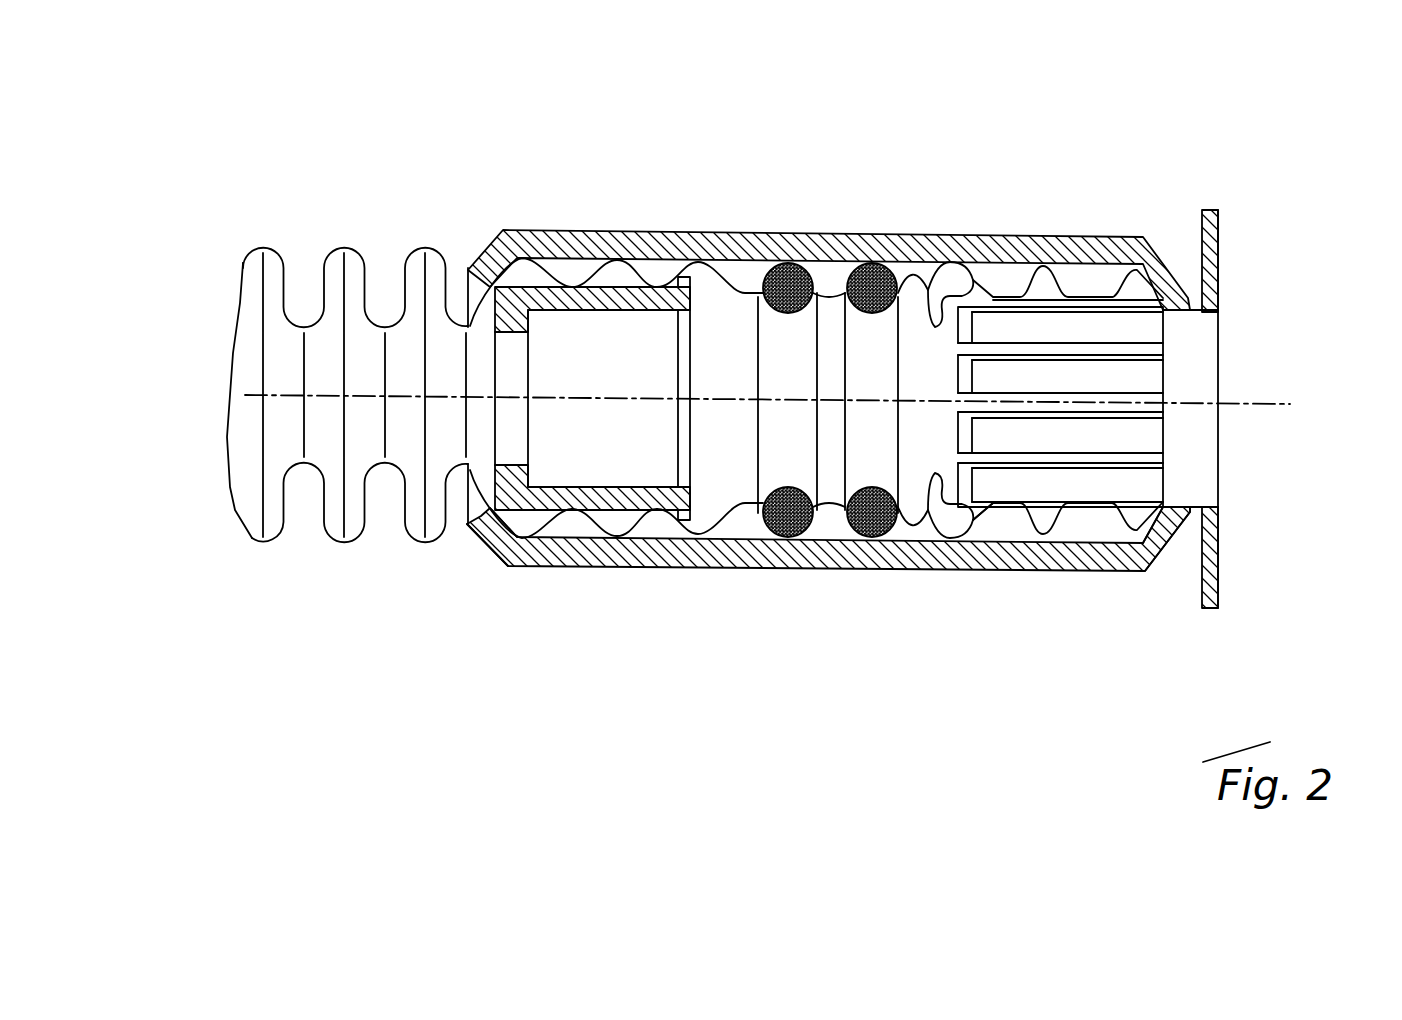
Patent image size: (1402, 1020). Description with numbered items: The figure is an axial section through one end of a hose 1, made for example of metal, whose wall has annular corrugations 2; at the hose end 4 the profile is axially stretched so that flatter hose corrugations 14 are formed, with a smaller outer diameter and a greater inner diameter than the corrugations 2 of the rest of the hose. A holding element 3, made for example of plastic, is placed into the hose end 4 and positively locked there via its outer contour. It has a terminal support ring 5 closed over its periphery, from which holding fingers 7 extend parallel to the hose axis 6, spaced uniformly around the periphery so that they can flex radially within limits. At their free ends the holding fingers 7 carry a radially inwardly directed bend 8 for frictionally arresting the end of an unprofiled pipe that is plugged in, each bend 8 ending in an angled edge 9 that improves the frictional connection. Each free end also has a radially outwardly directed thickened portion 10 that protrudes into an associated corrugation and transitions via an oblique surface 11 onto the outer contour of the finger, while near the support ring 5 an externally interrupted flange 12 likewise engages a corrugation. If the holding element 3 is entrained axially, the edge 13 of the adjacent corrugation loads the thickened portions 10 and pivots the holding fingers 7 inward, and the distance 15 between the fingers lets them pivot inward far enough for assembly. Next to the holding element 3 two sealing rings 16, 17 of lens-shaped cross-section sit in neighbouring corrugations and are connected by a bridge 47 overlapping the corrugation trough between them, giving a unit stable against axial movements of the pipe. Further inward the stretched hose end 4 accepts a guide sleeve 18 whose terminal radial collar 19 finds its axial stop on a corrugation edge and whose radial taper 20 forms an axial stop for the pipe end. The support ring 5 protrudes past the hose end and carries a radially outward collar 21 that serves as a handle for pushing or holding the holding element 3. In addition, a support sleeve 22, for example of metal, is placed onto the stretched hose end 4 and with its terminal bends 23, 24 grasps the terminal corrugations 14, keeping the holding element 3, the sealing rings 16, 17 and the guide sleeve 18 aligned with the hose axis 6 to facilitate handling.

The hose 1 is at (247, 352).
The annular corrugations 2 is at (264, 245).
The holding element 3 is at (1240, 360).
The hose end 4 is at (735, 570).
The support ring 5 is at (1197, 510).
The hose axis 6 is at (1291, 404).
The holding fingers 7 is at (1030, 437).
The bend 8 is at (942, 510).
The angled edge 9 is at (932, 284).
The thickened portion 10 is at (960, 517).
The oblique surface 11 is at (982, 288).
The flange 12 is at (1130, 298).
The edge 13 is at (1032, 287).
The flatter hose corrugations 14 is at (621, 523).
The distance 15 is at (1090, 463).
The sealing ring 16 is at (788, 263).
The sealing ring 17 is at (873, 264).
The guide sleeve 18 is at (597, 493).
The radial collar 19 is at (704, 262).
The radial taper 20 is at (513, 286).
The collar 21 is at (1220, 235).
The support sleeve 22 is at (814, 512).
The terminal bend 23 is at (1165, 550).
The terminal bend 24 is at (490, 547).
The bridge 47 is at (832, 292).